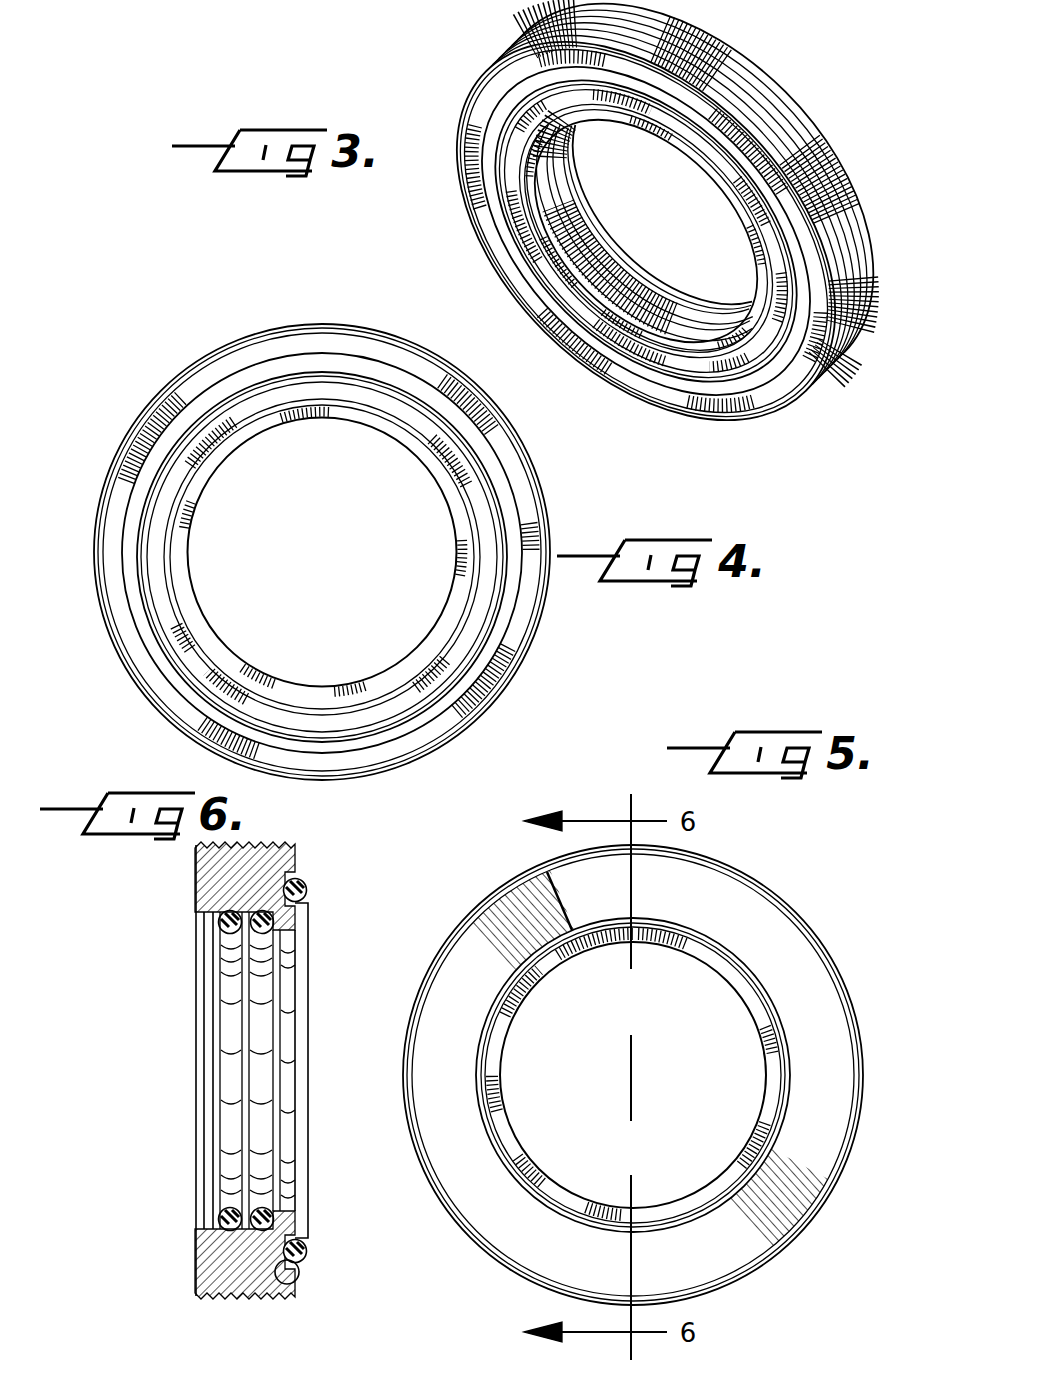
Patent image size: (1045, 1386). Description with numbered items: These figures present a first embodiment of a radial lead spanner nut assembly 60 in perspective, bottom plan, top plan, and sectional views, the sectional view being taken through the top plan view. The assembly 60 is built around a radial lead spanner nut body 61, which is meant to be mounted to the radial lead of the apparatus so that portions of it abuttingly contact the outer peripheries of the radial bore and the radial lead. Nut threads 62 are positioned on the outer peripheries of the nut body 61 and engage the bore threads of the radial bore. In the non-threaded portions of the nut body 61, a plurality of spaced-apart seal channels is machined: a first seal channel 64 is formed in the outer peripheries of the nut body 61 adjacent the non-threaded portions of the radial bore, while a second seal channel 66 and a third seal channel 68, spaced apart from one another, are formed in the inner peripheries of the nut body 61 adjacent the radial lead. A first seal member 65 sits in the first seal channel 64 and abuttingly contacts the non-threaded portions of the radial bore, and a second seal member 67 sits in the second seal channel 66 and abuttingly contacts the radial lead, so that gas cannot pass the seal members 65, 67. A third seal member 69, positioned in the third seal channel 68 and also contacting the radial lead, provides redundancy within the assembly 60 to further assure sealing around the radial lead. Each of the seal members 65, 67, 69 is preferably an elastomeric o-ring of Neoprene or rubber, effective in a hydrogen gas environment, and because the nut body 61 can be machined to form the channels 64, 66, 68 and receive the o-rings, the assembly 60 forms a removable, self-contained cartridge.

In FIG. 3, the radial lead spanner nut assembly 60 is at (403, 105).
In FIG. 4, the radial lead spanner nut assembly 60 is at (143, 327).
In FIG. 5, the radial lead spanner nut assembly 60 is at (760, 821).
In FIG. 6, the radial lead spanner nut assembly 60 is at (130, 920).
In FIG. 3, the radial lead spanner nut body 61 is at (649, 235).
In FIG. 4, the radial lead spanner nut body 61 is at (313, 343).
In FIG. 5, the radial lead spanner nut body 61 is at (760, 928).
In FIG. 6, the radial lead spanner nut body 61 is at (207, 1269).
In FIG. 3, the nut threads 62 is at (665, 246).
In FIG. 4, the nut threads 62 is at (541, 613).
In FIG. 5, the nut threads 62 is at (801, 1239).
In FIG. 6, the nut threads 62 is at (209, 845).
In FIG. 6, the first seal channel 64 is at (300, 1274).
In FIG. 3, the first seal member 65 is at (646, 231).
In FIG. 4, the first seal member 65 is at (148, 622).
In FIG. 6, the first seal member 65 is at (306, 888).
In FIG. 6, the second seal channel 66 is at (296, 876).
In FIG. 3, the second seal member 67 is at (645, 230).
In FIG. 4, the second seal member 67 is at (195, 608).
In FIG. 6, the second seal member 67 is at (272, 1218).
In FIG. 6, the third seal channel 68 is at (243, 917).
In FIG. 3, the third seal member 69 is at (473, 107).
In FIG. 5, the third seal member 69 is at (540, 975).
In FIG. 6, the third seal member 69 is at (236, 1219).